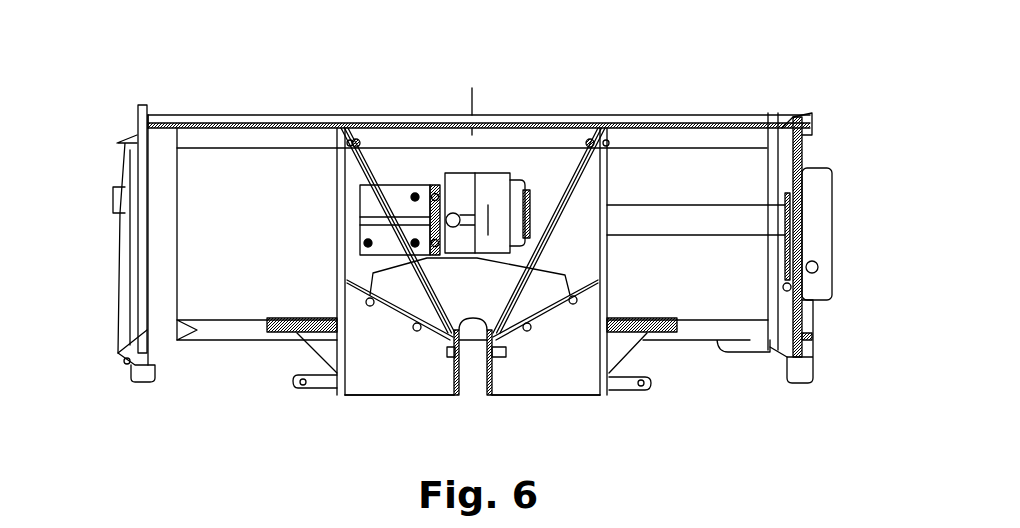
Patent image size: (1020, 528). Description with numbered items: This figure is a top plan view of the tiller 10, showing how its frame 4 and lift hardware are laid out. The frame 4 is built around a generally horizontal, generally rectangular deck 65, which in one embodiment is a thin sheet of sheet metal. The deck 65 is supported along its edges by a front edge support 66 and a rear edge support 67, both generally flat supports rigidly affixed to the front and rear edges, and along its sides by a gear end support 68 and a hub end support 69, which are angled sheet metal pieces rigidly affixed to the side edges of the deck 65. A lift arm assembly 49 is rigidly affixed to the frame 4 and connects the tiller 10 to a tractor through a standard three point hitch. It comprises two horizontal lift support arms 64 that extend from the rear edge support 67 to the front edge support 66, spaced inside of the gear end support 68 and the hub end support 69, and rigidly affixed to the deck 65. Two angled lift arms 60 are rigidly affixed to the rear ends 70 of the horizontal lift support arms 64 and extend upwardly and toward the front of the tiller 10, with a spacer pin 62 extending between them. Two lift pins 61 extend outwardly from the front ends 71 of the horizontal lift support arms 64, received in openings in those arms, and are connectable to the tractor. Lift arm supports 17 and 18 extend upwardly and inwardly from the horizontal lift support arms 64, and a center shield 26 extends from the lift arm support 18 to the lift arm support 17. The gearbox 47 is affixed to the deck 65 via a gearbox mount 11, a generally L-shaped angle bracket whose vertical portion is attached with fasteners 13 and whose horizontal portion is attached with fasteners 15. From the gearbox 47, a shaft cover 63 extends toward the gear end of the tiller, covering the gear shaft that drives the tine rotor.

The tiller 10 is at (568, 74).
The frame 4 is at (190, 128).
The hub end support 69 is at (165, 337).
The rear edge support 67 is at (245, 138).
The rear ends 70 is at (345, 128).
The gear end support 68 is at (782, 138).
The lift arms 60 is at (358, 173).
The fasteners 13 is at (430, 186).
The gearbox 47 is at (500, 178).
The horizontal lift support arms 64 is at (345, 208).
The deck 65 is at (265, 227).
The shaft cover 63 is at (708, 236).
The gearbox mount 11 is at (360, 228).
The fasteners 15 is at (360, 252).
The center shield 26 is at (481, 301).
The lift arm support 17 is at (388, 364).
The lift arm support 18 is at (568, 372).
The front edge support 66 is at (240, 333).
The front ends 71 is at (340, 392).
The lift pins 61 is at (318, 392).
The lift arm assembly 49 is at (410, 397).
The spacer pin 62 is at (467, 370).